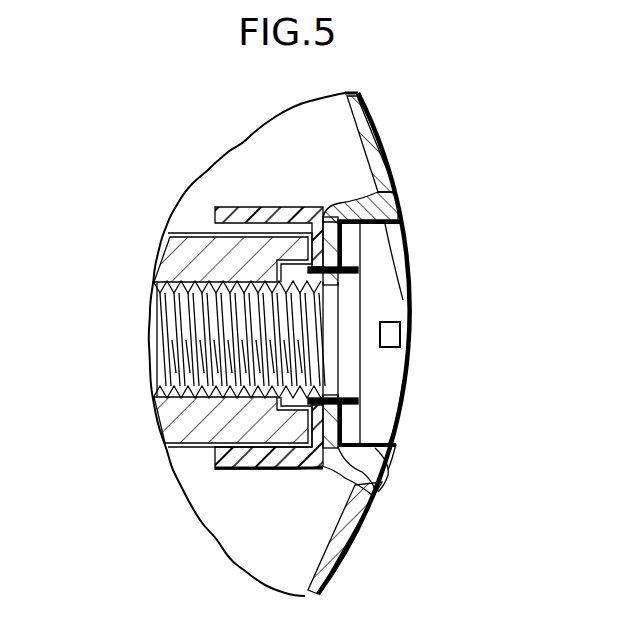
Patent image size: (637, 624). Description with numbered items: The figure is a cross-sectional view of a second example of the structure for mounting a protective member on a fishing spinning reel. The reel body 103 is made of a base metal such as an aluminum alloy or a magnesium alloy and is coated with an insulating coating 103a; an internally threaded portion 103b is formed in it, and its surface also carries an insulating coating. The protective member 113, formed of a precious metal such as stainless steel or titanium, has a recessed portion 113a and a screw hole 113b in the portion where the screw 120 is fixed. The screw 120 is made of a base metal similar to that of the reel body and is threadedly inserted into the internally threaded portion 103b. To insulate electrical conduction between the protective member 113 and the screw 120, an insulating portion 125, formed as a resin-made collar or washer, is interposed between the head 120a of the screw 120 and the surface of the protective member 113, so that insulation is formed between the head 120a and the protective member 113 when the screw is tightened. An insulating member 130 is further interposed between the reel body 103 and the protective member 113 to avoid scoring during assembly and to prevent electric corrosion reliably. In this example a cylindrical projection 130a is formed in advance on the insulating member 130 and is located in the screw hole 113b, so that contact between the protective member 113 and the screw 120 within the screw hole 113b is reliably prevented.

The protective member 113 is at (374, 147).
The recessed portion 113a is at (396, 224).
The screw hole 113b is at (368, 407).
The screw 120 is at (158, 366).
The head 120a is at (393, 265).
The insulating portion 125 is at (392, 436).
The insulating member 130 is at (228, 484).
The cylindrical projection 130a is at (372, 281).
The reel body 103 is at (158, 418).
The insulating coating 103a is at (168, 222).
The internally threaded portion 103b is at (158, 294).